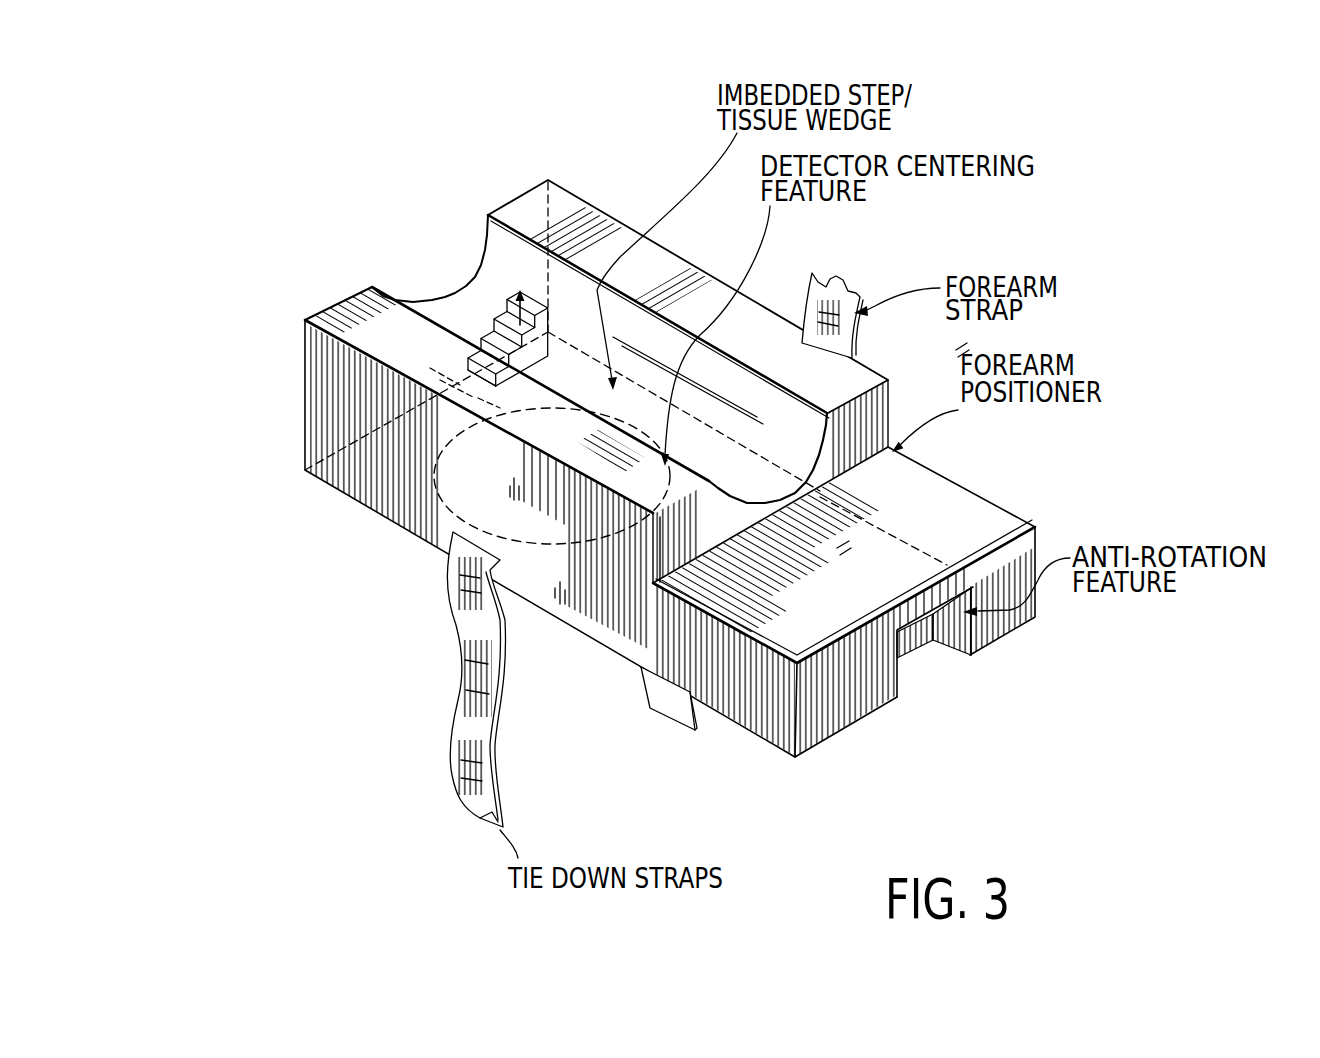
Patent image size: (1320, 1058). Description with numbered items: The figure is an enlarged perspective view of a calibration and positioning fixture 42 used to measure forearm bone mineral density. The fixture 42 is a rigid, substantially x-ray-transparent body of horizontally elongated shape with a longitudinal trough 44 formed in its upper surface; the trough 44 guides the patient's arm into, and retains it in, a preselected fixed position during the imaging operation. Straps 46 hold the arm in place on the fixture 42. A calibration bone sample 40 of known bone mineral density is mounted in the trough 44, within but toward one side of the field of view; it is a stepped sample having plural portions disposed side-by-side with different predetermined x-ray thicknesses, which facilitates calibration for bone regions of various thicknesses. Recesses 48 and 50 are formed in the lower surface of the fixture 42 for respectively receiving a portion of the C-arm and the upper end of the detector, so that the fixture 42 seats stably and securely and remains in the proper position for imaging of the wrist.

The calibration bone sample 40 is at (492, 330).
The fixture 42 is at (297, 402).
The longitudinal trough 44 is at (600, 290).
The straps 46 is at (833, 281).
The recess 48 is at (932, 642).
The recess 50 is at (437, 499).